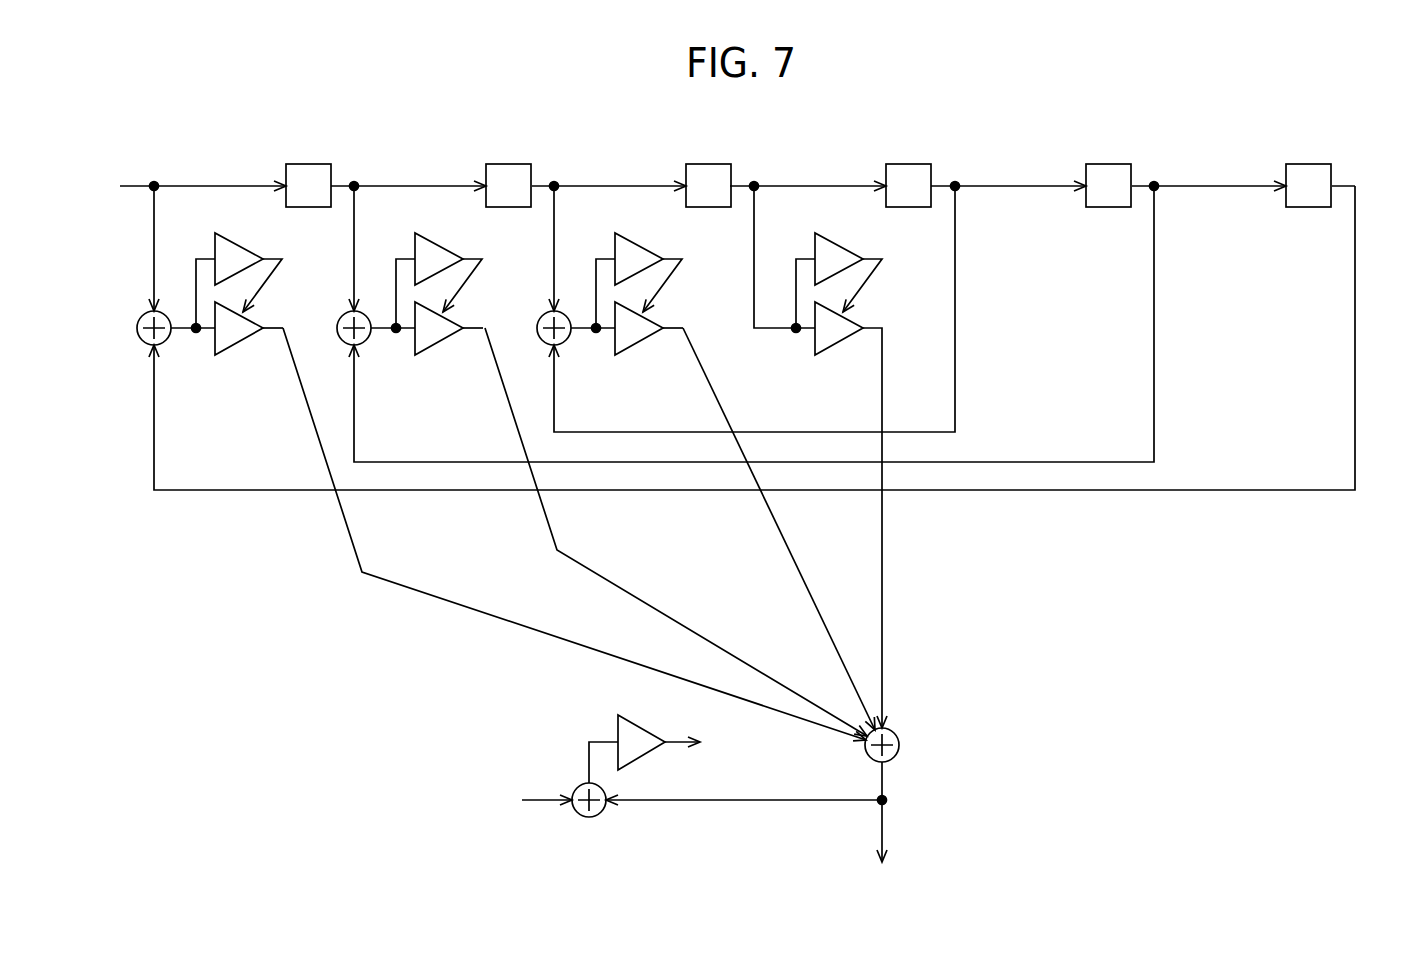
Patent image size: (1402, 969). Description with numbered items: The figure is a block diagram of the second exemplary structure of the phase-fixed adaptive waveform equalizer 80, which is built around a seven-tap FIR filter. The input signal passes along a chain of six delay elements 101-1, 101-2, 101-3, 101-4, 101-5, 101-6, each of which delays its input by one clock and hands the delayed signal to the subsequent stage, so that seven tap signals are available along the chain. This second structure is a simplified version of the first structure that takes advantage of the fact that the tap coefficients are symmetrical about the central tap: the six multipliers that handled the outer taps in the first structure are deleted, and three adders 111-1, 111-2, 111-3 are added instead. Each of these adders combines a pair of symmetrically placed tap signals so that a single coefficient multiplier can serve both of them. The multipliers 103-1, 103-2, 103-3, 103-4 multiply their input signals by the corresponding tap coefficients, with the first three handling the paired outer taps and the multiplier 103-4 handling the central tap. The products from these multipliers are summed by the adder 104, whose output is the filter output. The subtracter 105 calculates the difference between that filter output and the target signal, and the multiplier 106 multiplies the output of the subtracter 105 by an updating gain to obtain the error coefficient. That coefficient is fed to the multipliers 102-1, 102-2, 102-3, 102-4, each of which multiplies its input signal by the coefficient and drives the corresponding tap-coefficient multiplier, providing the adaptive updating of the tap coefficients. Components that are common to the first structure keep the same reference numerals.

The phase-fixed adaptive waveform equalizer 80 is at (1007, 798).
The delay element 101-1 is at (308, 164).
The delay element 101-2 is at (516, 162).
The delay element 101-3 is at (716, 162).
The delay element 101-4 is at (916, 162).
The delay element 101-5 is at (1116, 162).
The delay element 101-6 is at (1316, 162).
The multiplier 102-1 is at (246, 248).
The multiplier 102-2 is at (456, 275).
The multiplier 102-3 is at (656, 275).
The multiplier 102-4 is at (856, 275).
The multiplier 103-1 is at (236, 355).
The multiplier 103-2 is at (449, 349).
The multiplier 103-3 is at (649, 349).
The multiplier 103-4 is at (811, 294).
The adder 111-1 is at (166, 343).
The adder 111-2 is at (379, 309).
The adder 111-3 is at (579, 309).
The adder 104 is at (899, 743).
The subtracter 105 is at (589, 817).
The multiplier 106 is at (614, 732).